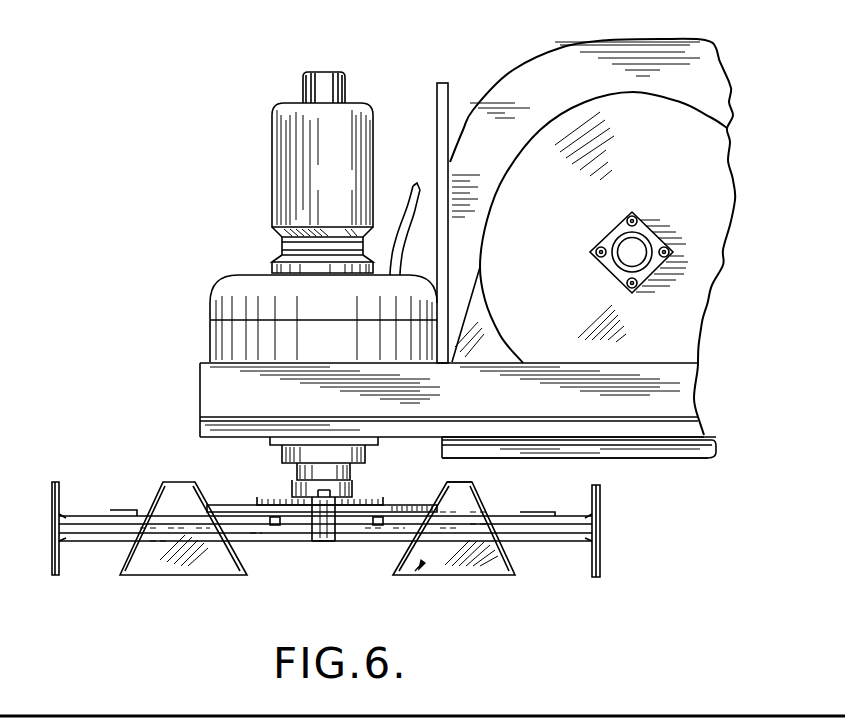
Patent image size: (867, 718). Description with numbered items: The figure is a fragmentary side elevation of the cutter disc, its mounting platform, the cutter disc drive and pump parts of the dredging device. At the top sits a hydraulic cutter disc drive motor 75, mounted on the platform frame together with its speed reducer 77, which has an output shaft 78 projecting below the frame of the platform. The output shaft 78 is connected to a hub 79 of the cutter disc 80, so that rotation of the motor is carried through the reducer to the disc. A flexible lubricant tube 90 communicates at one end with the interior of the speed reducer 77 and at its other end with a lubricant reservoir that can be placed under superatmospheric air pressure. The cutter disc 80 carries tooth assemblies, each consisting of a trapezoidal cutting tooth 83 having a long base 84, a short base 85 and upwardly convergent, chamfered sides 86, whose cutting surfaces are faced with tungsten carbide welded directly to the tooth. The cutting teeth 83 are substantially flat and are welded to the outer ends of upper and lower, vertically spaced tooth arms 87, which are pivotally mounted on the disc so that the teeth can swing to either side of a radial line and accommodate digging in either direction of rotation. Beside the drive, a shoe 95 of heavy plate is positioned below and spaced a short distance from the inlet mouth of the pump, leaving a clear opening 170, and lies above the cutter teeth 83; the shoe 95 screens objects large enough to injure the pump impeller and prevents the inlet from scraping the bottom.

The hydraulic cutter disc drive motor 75 is at (272, 152).
The speed reducer 77 is at (210, 300).
The output shaft 78 is at (292, 472).
The hub 79 is at (355, 490).
The cutter disc 80 is at (400, 535).
The cutting tooth 83 is at (416, 570).
The long base 84 is at (470, 577).
The short base 85 is at (457, 484).
The chamfered side 86 is at (128, 552).
The tooth arm 87 is at (127, 483).
The flexible lubricant tube 90 is at (400, 212).
The shoe 95 is at (655, 460).
The clear opening 170 is at (690, 432).